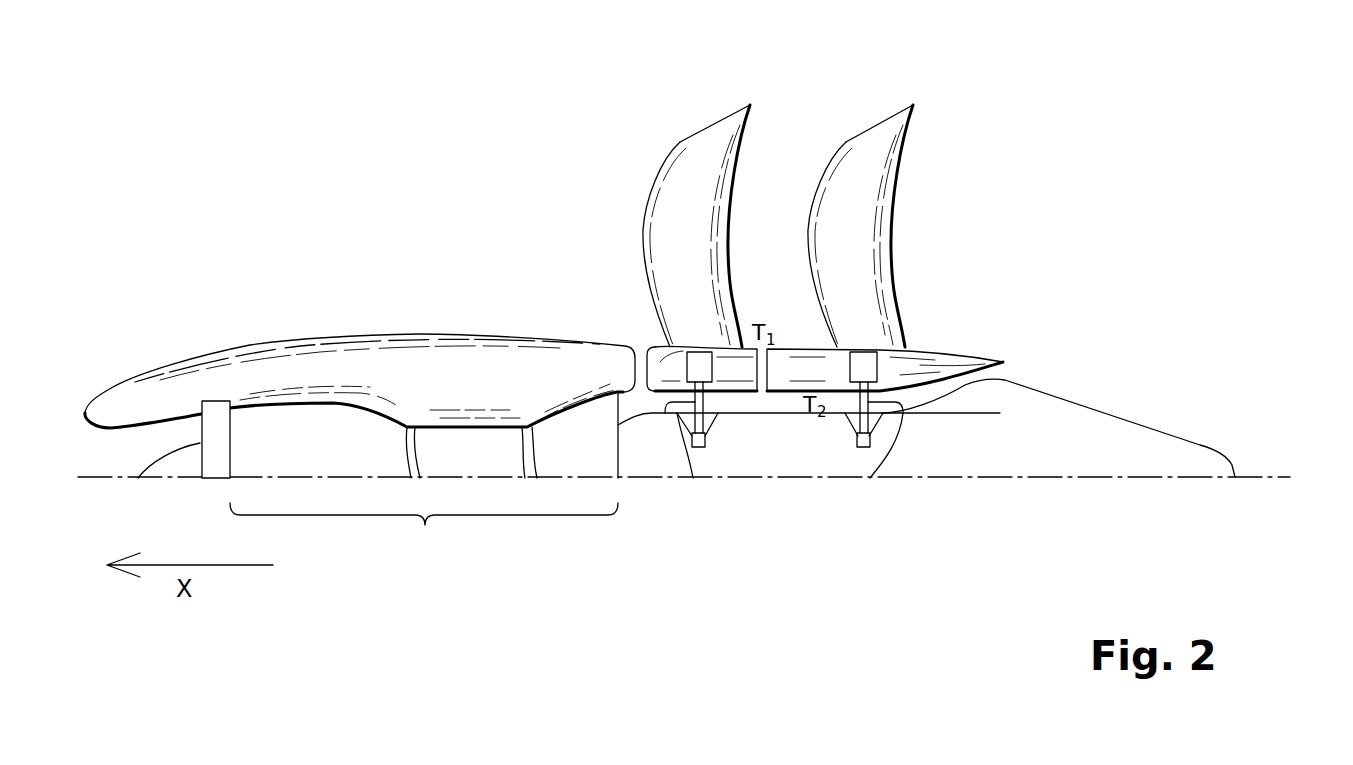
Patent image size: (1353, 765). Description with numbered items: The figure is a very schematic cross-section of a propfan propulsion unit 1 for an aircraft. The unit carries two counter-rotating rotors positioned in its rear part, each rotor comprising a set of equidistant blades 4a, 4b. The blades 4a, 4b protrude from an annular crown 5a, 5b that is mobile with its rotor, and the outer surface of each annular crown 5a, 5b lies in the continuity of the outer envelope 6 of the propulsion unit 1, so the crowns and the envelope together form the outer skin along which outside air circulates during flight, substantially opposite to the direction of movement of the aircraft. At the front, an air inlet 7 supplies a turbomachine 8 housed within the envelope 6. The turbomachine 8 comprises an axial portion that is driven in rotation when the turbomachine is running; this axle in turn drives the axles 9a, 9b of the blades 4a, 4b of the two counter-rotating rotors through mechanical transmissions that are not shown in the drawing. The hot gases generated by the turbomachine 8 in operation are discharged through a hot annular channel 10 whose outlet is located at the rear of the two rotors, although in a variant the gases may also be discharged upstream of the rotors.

The propfan propulsion unit 1 is at (360, 340).
The blades of the first rotor 4a is at (706, 146).
The blades of the second rotor 4b is at (868, 142).
The first annular crown 5a is at (661, 362).
The second annular crown 5b is at (942, 362).
The outer envelope 6 is at (308, 340).
The air inlet 7 is at (96, 457).
The turbomachine 8 is at (424, 477).
The axle of the first rotor blades 9a is at (681, 444).
The axle of the second rotor blades 9b is at (877, 458).
The hot annular channel 10 is at (773, 400).